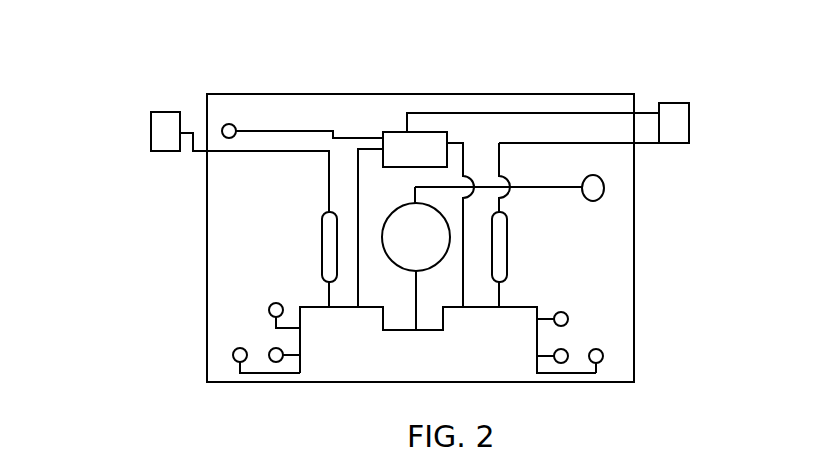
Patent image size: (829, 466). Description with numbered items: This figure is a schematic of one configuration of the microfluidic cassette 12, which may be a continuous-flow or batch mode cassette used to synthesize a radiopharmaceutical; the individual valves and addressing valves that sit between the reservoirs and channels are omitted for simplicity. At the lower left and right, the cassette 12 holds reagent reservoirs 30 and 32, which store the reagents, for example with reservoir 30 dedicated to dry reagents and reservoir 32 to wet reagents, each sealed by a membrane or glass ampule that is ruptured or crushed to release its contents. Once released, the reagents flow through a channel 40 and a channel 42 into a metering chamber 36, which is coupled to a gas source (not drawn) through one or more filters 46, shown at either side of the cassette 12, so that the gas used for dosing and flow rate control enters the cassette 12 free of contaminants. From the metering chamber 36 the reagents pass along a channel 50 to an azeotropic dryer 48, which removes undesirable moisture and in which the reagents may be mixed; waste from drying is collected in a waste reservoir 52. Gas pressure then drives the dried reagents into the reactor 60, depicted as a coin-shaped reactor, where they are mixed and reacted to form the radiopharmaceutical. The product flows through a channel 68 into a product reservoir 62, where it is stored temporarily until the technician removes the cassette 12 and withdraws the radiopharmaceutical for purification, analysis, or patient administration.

The microfluidic cassette 12 is at (148, 52).
The reagent reservoir 30 is at (276, 302).
The reagent reservoir 32 is at (563, 312).
The metering chamber 36 is at (321, 245).
The channel 40 is at (315, 310).
The channel 42 is at (512, 310).
The filter 46 is at (150, 129).
The azeotropic dryer 48 is at (402, 131).
The channel 50 is at (360, 207).
The waste reservoir 52 is at (229, 124).
The reactor 60 is at (392, 263).
The product reservoir 62 is at (594, 202).
The channel 68 is at (553, 186).